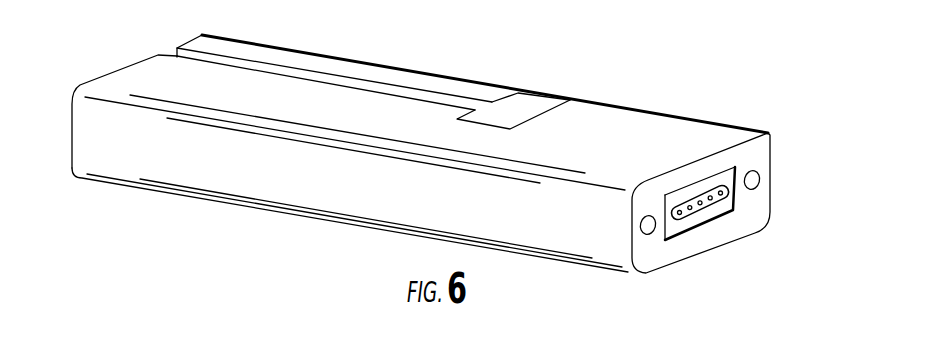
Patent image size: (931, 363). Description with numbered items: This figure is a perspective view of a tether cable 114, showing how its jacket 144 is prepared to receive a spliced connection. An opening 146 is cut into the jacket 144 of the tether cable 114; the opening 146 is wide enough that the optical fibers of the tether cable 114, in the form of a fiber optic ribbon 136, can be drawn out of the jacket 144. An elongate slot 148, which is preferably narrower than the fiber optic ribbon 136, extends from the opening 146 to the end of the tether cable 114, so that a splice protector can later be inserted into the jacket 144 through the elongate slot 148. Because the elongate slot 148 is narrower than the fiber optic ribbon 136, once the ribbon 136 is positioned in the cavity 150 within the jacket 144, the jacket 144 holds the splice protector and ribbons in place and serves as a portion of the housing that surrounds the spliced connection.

The tether cable 114 is at (640, 127).
The fiber optic ribbon 136 is at (700, 212).
The jacket 144 is at (752, 155).
The opening 146 is at (518, 112).
The elongate slot 148 is at (248, 65).
The cavity 150 is at (672, 227).